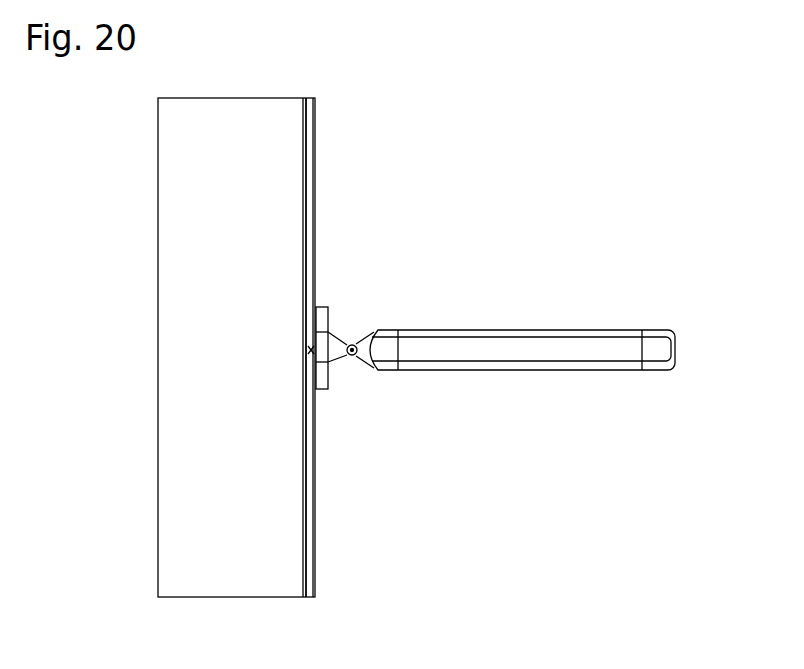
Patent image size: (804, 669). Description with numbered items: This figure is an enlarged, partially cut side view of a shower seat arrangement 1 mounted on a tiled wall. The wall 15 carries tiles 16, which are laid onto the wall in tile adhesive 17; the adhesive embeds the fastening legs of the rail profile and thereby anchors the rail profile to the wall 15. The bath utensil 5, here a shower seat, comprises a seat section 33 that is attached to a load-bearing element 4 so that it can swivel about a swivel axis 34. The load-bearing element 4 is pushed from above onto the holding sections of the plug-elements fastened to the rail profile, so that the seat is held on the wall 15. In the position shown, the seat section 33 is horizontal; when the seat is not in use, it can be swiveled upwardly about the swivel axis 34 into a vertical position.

The mounting assembly 1 is at (502, 267).
The load-bearing element 4 is at (330, 338).
The bath utensil 5 is at (606, 326).
The wall 15 is at (218, 573).
The tiles 16 is at (310, 163).
The tile adhesive 17 is at (305, 571).
The seat section 33 is at (470, 352).
The swivel axis 34 is at (357, 345).